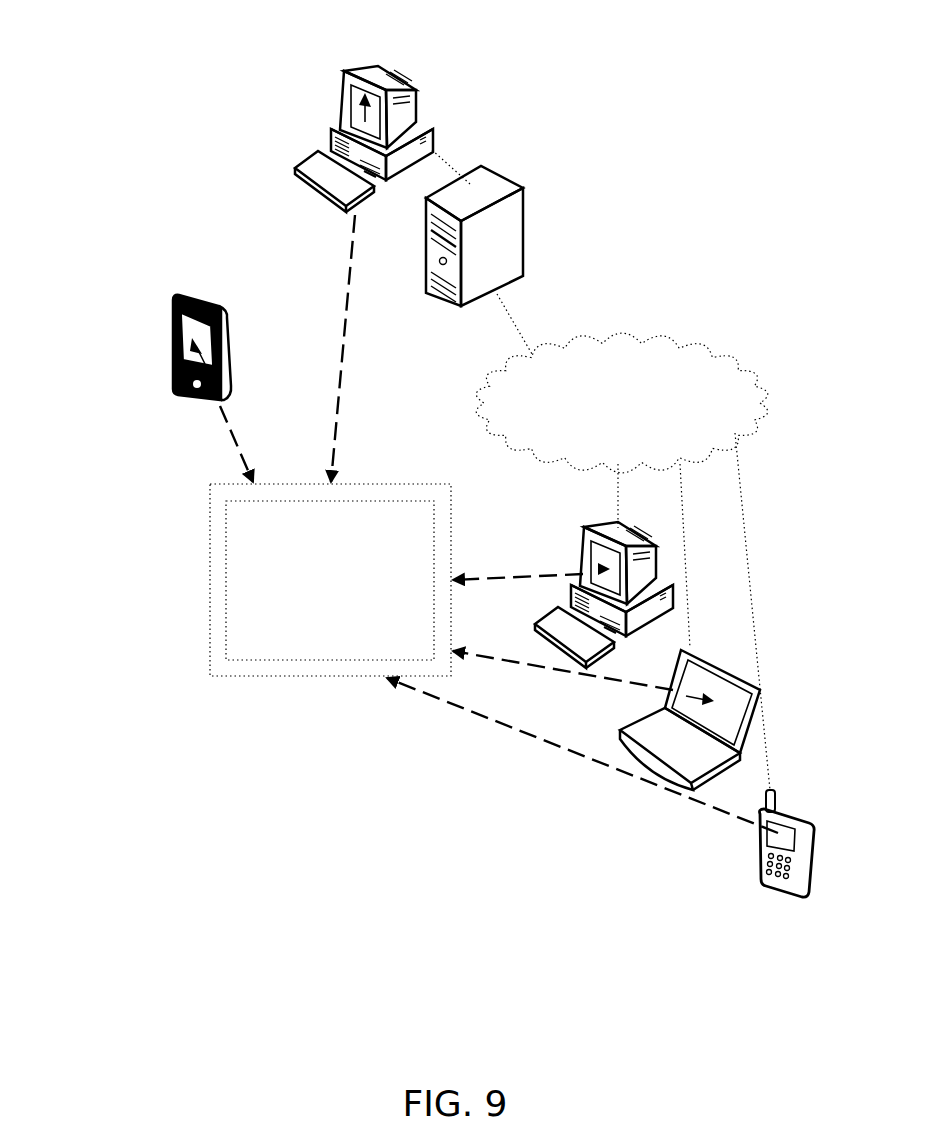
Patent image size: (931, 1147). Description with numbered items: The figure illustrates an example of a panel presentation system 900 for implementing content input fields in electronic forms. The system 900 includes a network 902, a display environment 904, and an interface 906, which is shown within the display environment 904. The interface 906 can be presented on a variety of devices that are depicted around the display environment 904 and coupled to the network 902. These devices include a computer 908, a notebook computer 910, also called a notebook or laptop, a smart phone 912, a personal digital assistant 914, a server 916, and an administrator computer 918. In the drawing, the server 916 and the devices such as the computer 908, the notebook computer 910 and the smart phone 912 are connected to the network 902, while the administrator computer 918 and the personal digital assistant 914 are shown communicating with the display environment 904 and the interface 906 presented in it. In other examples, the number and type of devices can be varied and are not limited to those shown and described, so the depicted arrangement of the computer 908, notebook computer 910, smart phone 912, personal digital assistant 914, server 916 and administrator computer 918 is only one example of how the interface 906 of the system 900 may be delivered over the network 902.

The system 900 is at (116, 90).
The network 902 is at (595, 433).
The display environment 904 is at (330, 559).
The interface 906 is at (303, 578).
The computer 908 is at (616, 518).
The notebook computer 910 is at (690, 646).
The smart phone 912 is at (780, 807).
The personal digital assistant 914 is at (192, 293).
The server 916 is at (497, 168).
The administrator computer 918 is at (405, 91).